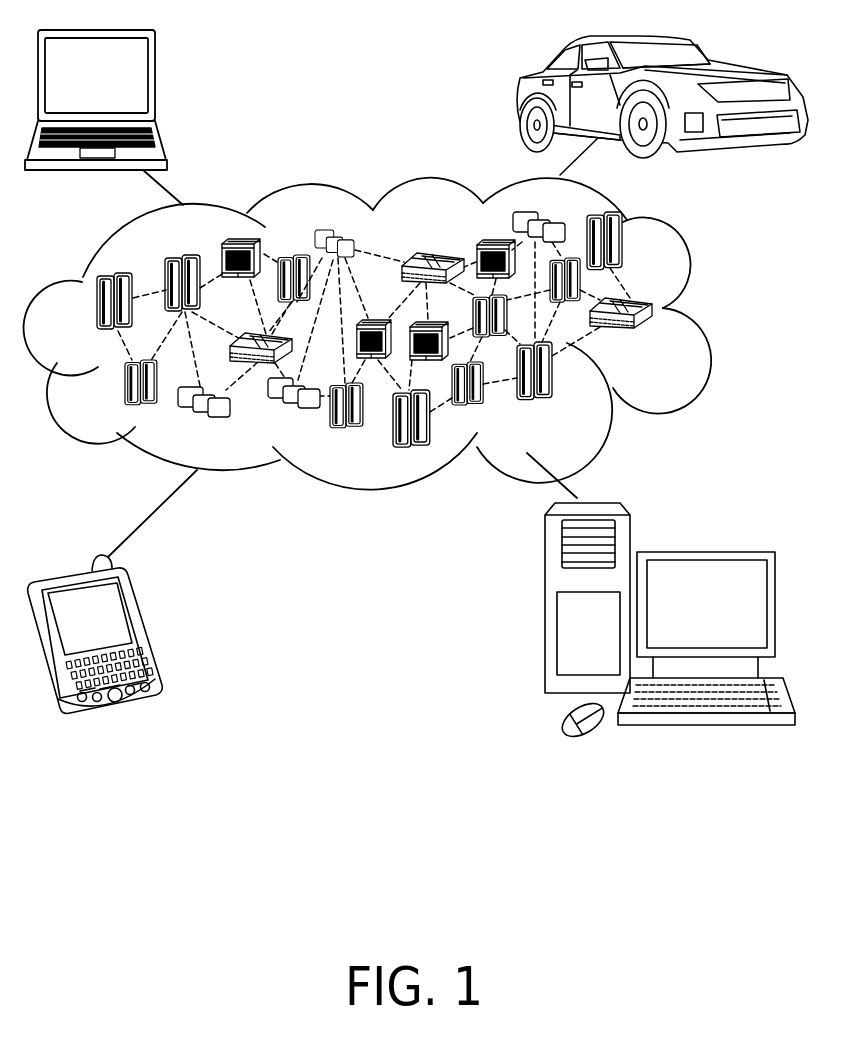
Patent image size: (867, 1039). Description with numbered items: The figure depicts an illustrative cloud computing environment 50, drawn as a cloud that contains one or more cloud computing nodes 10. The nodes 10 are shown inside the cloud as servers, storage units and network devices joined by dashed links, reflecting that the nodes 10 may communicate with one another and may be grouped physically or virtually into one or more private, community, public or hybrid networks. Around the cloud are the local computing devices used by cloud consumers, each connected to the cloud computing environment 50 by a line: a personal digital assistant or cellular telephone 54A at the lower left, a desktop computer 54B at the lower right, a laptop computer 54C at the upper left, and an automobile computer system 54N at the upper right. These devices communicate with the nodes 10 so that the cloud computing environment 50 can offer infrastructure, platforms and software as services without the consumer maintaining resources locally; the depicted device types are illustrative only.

The cloud computing node 10 is at (652, 333).
The cloud computing environment 50 is at (704, 311).
The personal digital assistant or cellular telephone 54A is at (143, 632).
The desktop computer 54B is at (706, 552).
The laptop computer 54C is at (156, 84).
The automobile computer system 54N is at (521, 100).